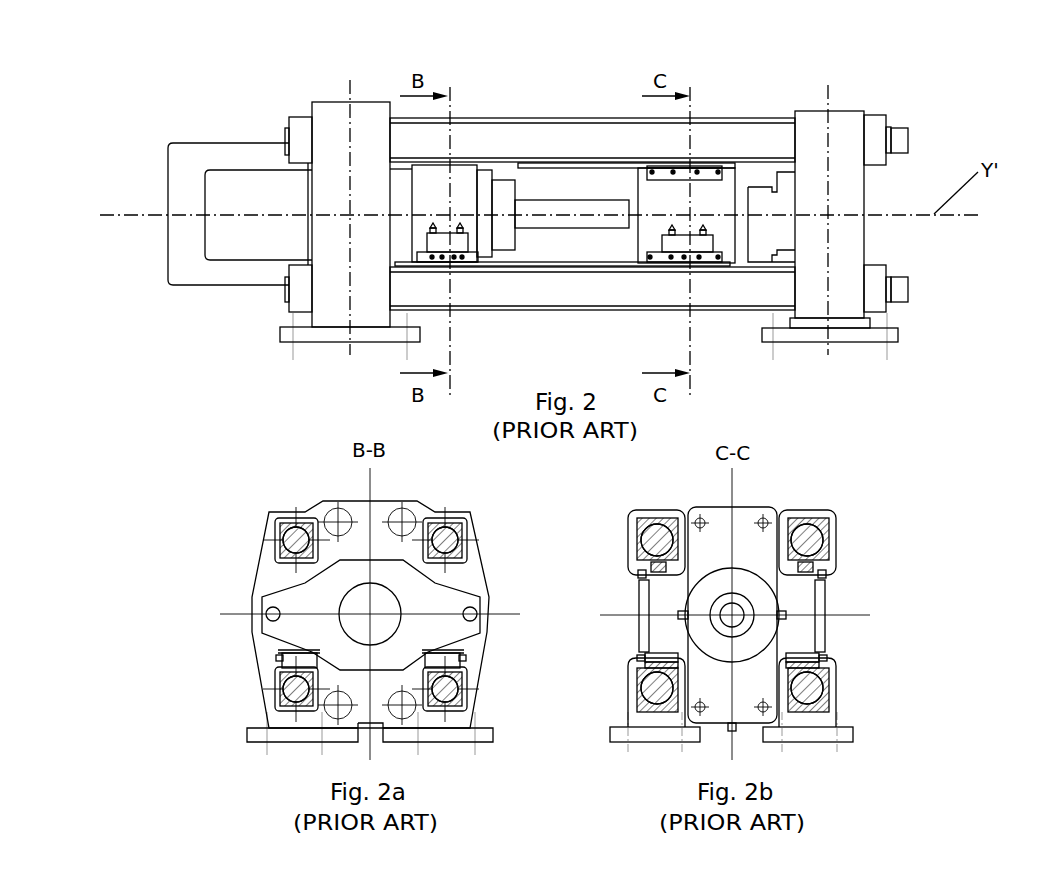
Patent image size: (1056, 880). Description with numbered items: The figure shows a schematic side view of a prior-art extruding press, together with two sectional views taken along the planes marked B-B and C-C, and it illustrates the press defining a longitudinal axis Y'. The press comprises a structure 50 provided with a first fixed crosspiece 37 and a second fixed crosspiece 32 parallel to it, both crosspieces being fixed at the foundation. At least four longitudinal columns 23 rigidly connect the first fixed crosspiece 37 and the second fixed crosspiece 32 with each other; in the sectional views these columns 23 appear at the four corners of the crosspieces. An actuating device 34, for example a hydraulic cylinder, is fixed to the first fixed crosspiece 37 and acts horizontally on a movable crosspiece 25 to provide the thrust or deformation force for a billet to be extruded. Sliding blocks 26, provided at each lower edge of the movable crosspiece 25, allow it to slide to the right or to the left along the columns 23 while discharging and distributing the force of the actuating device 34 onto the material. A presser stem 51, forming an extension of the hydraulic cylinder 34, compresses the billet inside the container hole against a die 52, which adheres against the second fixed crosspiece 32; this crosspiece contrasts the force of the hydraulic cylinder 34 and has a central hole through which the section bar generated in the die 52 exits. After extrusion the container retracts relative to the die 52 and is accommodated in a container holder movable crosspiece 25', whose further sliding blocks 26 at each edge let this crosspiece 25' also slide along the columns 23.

In FIG. 2, the longitudinal columns 23 is at (562, 135).
In FIG. 2A, the longitudinal columns 23 is at (280, 530).
In FIG. 2B, the longitudinal columns 23 is at (640, 702).
In FIG. 2, the movable crosspiece 25 is at (562, 152).
In FIG. 2A, the movable crosspiece 25 is at (340, 594).
In FIG. 2, the container holder movable crosspiece 25' is at (646, 160).
In FIG. 2B, the container holder movable crosspiece 25' is at (778, 600).
In FIG. 2, the sliding blocks 26 is at (653, 173).
In FIG. 2A, the sliding blocks 26 is at (309, 657).
In FIG. 2B, the sliding blocks 26 is at (800, 570).
In FIG. 2, the second fixed crosspiece 32 is at (843, 137).
In FIG. 2, the actuating device 34 is at (250, 192).
In FIG. 2, the first fixed crosspiece 37 is at (362, 128).
In FIG. 2, the structure 50 is at (946, 92).
In FIG. 2, the presser stem 51 is at (541, 207).
In FIG. 2, the die 52 is at (782, 225).